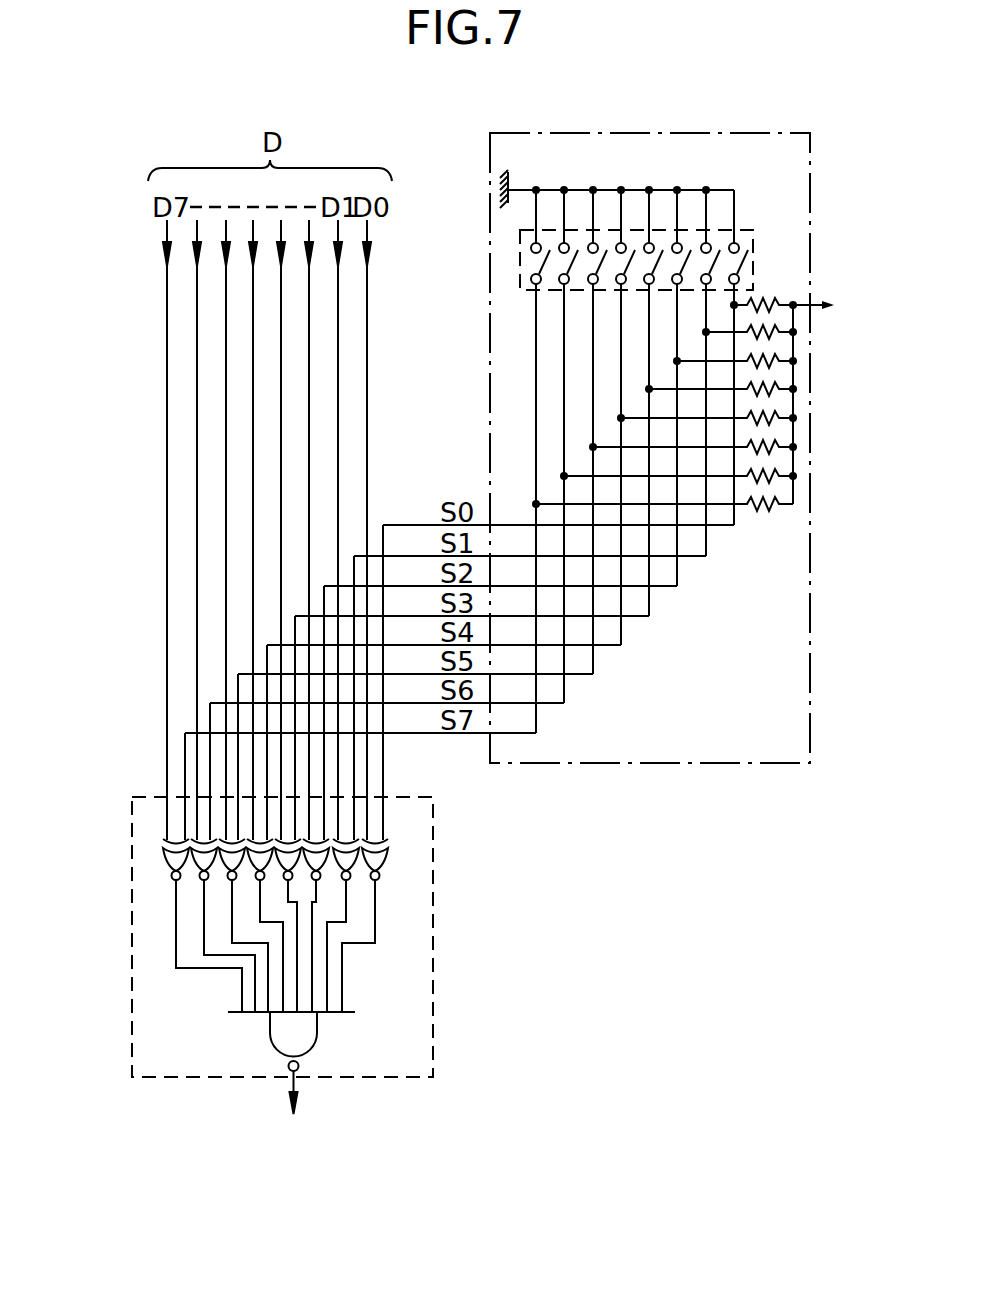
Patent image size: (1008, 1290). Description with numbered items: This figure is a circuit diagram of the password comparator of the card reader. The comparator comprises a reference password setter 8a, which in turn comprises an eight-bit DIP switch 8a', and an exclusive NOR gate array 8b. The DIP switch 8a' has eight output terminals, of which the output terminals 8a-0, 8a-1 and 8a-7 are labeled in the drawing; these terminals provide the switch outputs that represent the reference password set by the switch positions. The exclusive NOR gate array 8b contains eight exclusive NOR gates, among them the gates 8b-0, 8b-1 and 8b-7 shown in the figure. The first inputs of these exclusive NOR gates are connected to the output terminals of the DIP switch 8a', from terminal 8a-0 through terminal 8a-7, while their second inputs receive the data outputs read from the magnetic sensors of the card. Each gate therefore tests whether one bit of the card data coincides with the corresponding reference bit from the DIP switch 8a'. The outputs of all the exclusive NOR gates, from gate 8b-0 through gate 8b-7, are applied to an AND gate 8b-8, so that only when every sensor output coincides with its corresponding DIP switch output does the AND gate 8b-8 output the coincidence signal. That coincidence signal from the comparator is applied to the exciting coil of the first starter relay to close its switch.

The reference password setter 8a is at (644, 423).
The DIP switch 8a' is at (644, 344).
The output terminal 8a-7 is at (540, 262).
The output terminal 8a-1 is at (722, 262).
The output terminal 8a-0 is at (742, 272).
The exclusive NOR gate array 8b is at (436, 990).
The exclusive NOR gate 8b-7 is at (172, 858).
The exclusive NOR gate 8b-1 is at (352, 860).
The exclusive NOR gate 8b-0 is at (380, 858).
The AND gate 8b-8 is at (308, 1036).